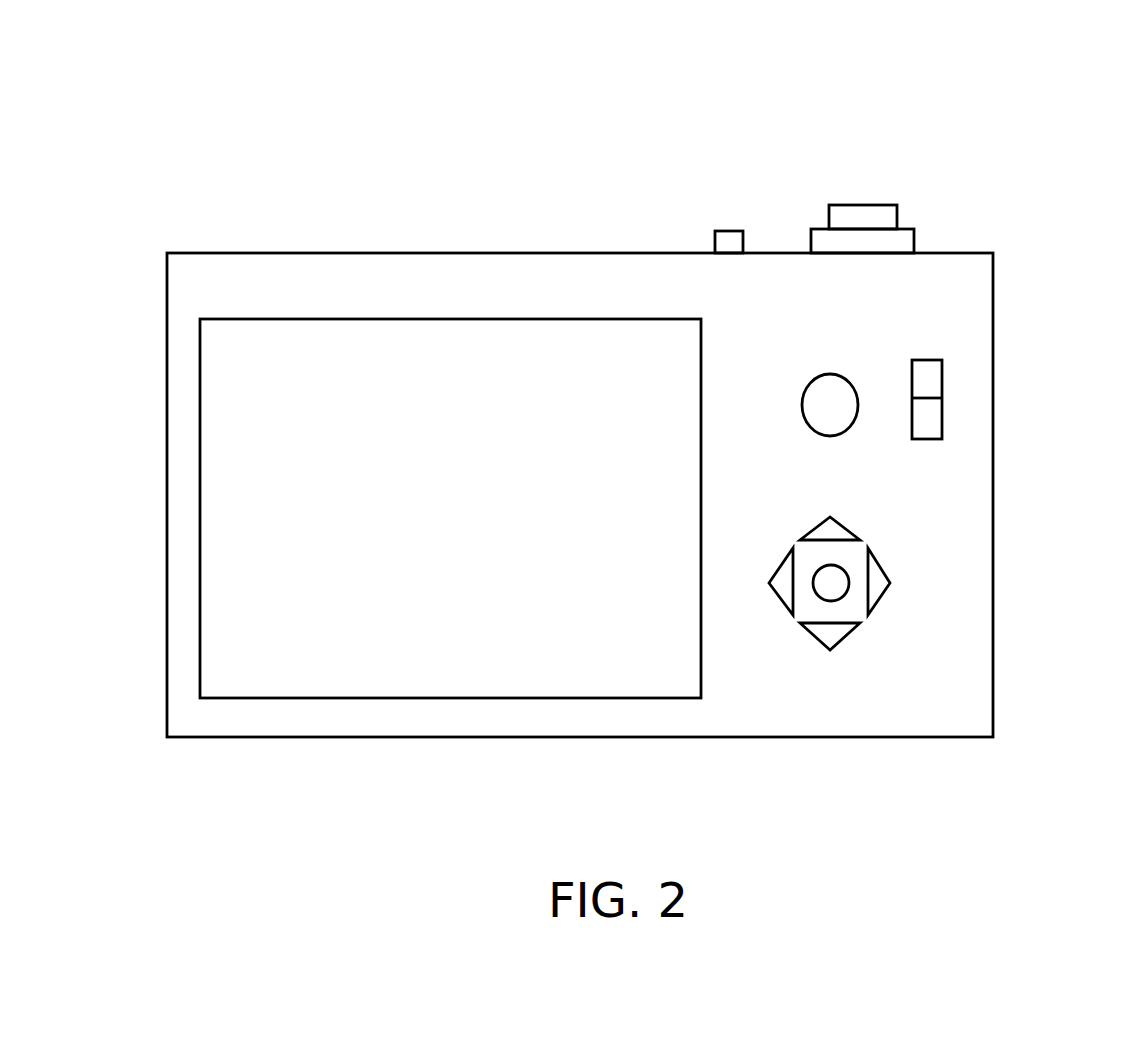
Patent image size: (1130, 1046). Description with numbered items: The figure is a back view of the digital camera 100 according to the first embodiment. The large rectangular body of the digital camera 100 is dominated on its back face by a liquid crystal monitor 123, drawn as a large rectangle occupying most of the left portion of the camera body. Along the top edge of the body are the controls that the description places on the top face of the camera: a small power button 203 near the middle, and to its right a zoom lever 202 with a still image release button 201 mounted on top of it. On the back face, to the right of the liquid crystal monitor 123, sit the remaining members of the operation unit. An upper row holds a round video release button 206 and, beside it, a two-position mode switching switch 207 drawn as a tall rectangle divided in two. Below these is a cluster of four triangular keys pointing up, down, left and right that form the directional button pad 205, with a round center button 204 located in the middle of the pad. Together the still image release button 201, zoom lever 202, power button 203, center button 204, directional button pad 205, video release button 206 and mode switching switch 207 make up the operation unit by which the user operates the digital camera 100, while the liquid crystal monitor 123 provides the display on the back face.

The digital camera 100 is at (128, 114).
The liquid crystal monitor 123 is at (385, 492).
The still image release button 201 is at (885, 213).
The zoom lever 202 is at (903, 243).
The power button 203 is at (730, 240).
The center button 204 is at (833, 585).
The directional button pad 205 is at (830, 633).
The video release button 206 is at (830, 405).
The mode switching switch 207 is at (927, 421).